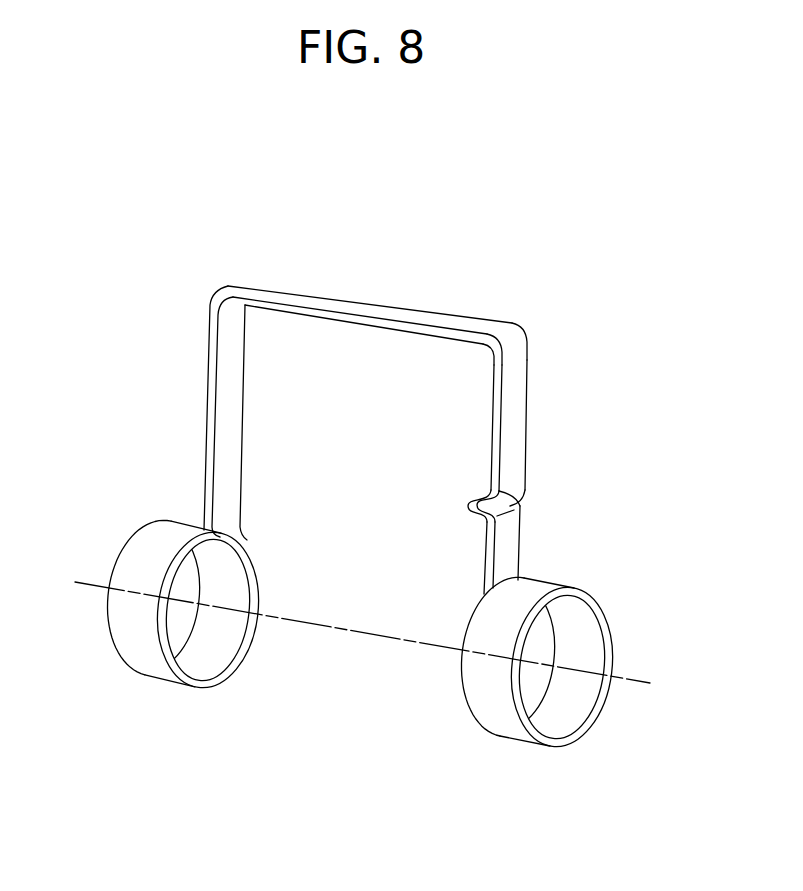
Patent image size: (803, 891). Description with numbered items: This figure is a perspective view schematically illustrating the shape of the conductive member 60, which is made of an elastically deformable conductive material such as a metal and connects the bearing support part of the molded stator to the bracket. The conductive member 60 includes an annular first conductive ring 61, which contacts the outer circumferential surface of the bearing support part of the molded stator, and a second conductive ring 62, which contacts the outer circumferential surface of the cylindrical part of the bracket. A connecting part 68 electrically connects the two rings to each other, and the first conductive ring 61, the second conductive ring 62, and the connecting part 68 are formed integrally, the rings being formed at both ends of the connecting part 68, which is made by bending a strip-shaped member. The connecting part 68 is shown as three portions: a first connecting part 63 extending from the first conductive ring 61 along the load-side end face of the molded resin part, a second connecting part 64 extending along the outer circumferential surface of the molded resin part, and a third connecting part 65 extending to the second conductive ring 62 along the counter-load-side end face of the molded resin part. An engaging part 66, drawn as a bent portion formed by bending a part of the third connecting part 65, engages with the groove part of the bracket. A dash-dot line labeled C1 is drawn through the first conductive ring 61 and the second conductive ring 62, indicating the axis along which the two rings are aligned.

The conductive member 60 is at (502, 260).
The first conductive ring 61 is at (146, 544).
The second conductive ring 62 is at (532, 588).
The first connecting part 63 is at (208, 358).
The second connecting part 64 is at (368, 312).
The third connecting part 65 is at (513, 418).
The engaging part 66 is at (500, 497).
The connecting part 68 is at (505, 325).
The central axis C1 is at (635, 677).